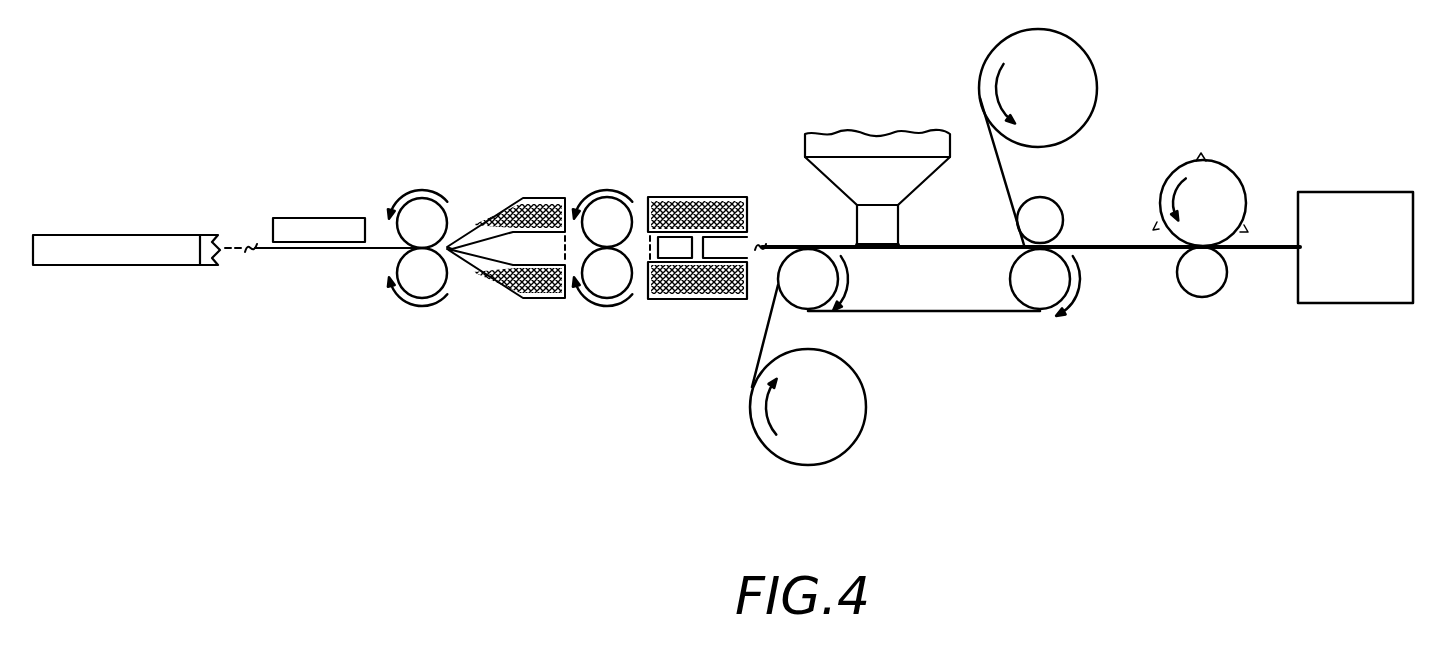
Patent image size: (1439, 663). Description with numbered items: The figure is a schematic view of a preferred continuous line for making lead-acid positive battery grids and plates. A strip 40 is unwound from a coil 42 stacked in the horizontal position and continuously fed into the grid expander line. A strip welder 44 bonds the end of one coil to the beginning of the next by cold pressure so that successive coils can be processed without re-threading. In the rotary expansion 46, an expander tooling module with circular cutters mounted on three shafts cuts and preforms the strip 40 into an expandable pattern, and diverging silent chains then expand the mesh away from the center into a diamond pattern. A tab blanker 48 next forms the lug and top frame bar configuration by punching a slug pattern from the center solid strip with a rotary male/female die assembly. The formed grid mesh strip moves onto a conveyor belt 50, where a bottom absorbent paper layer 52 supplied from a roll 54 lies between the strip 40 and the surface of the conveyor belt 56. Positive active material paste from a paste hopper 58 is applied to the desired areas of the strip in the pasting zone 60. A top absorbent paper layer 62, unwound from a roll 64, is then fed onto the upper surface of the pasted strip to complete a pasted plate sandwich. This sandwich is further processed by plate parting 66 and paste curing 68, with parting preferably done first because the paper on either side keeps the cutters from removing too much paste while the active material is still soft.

The strip 40 is at (312, 250).
The coil 42 is at (145, 266).
The strip welder 44 is at (328, 216).
The rotary expansion 46 is at (527, 192).
The tab blanker 48 is at (714, 192).
The conveyor belt 50 is at (1027, 277).
The bottom absorbent paper layer 52 is at (760, 352).
The roll 54 is at (866, 400).
The surface of the conveyor belt 56 is at (838, 243).
The paste hopper 58 is at (880, 133).
The pasting zone 60 is at (887, 258).
The top absorbent paper layer 62 is at (1003, 173).
The roll 64 is at (1097, 58).
The plate parting 66 is at (1232, 168).
The paste curing 68 is at (1377, 191).